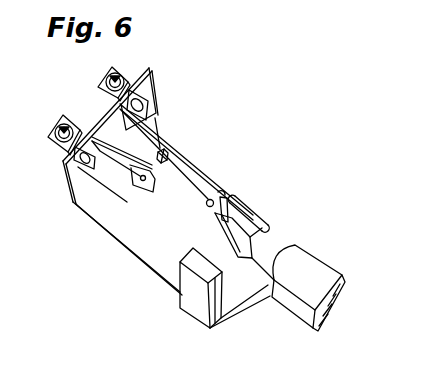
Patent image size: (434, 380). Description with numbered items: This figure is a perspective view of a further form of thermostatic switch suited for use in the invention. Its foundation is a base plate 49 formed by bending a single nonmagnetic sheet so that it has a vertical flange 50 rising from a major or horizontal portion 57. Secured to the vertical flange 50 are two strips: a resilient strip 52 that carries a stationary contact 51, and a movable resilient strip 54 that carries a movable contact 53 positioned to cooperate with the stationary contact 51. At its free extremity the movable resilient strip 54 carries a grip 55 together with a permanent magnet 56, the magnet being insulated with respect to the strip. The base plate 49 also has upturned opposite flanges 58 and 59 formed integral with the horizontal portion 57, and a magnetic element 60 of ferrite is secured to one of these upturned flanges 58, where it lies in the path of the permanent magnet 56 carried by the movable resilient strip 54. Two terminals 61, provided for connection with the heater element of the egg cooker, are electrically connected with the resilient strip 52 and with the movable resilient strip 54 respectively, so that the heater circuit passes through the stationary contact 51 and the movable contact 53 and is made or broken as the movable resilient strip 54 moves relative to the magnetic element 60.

The base plate 49 is at (87, 217).
The vertical flange 50 is at (66, 169).
The stationary contact 51 is at (123, 165).
The resilient strip 52 is at (78, 203).
The movable contact 53 is at (168, 146).
The movable resilient strip 54 is at (193, 177).
The grip 55 is at (317, 257).
The permanent magnet 56 is at (258, 214).
The horizontal portion 57 is at (155, 234).
The upturned flange 58 is at (195, 307).
The upturned flange 59 is at (252, 198).
The magnetic element 60 is at (204, 268).
The terminals 61 is at (103, 88).